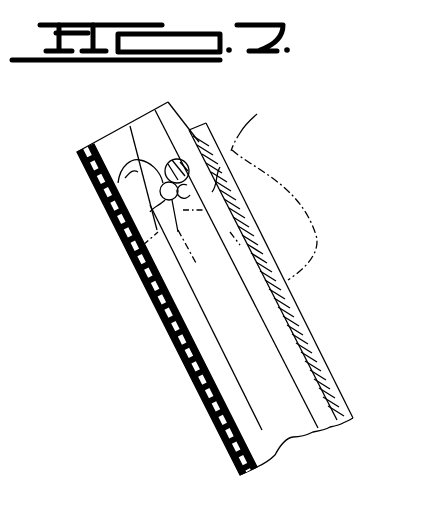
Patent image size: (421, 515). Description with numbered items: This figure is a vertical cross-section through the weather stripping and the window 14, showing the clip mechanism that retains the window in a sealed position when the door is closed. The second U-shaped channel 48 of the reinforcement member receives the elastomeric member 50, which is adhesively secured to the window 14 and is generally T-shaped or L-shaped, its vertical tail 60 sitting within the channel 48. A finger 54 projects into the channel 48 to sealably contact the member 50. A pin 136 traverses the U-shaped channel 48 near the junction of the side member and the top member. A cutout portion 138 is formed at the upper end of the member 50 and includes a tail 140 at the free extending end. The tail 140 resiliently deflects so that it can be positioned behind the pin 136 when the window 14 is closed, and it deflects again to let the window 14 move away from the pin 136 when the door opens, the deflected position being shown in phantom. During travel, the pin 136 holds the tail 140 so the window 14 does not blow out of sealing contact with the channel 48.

The window 14 is at (331, 380).
The second U-shaped channel 48 is at (97, 152).
The member 50 is at (291, 456).
The finger 54 is at (178, 120).
The vertical tail 60 is at (279, 387).
The pin 136 is at (164, 161).
The cutout portion 138 is at (128, 226).
The tail 140 is at (118, 183).